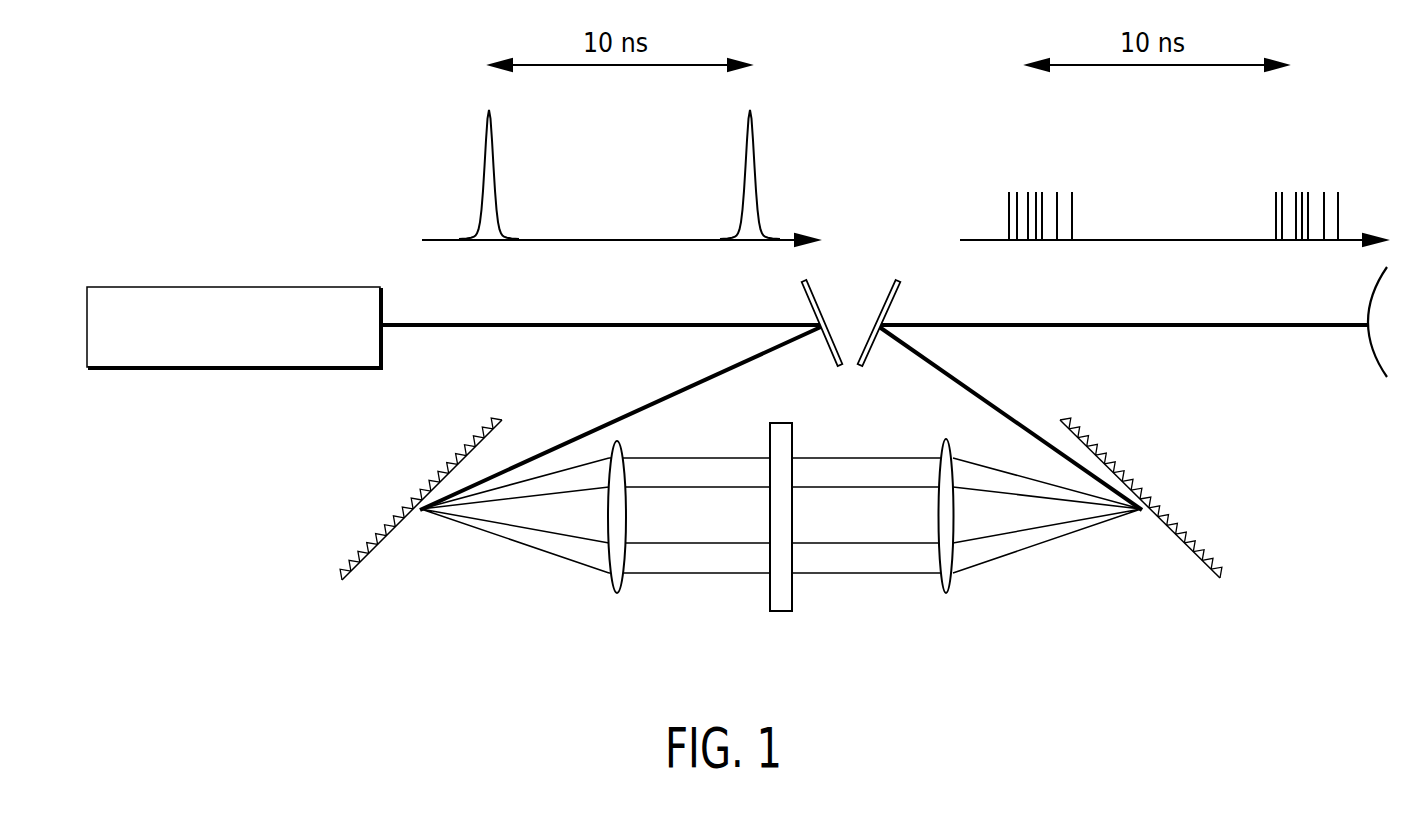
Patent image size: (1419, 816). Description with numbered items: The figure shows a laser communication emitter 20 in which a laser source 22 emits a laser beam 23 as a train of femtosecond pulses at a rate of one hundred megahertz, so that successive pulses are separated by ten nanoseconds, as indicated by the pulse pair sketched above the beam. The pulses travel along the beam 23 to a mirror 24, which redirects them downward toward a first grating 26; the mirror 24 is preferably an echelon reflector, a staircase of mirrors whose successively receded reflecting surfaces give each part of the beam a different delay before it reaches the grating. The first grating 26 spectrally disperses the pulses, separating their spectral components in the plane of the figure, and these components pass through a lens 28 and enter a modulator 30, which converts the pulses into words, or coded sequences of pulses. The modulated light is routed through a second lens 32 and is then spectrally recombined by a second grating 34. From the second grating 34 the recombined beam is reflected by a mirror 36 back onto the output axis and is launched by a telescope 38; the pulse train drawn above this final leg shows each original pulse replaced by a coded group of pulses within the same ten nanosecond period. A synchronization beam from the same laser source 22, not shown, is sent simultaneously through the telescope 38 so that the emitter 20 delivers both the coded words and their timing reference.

The laser communication emitter 20 is at (221, 110).
The laser source 22 is at (193, 285).
The laser beam 23 is at (485, 318).
The mirror 24 is at (803, 293).
The first grating 26 is at (461, 462).
The lens 28 is at (613, 582).
The modulator 30 is at (780, 423).
The lens 32 is at (953, 582).
The second grating 34 is at (1173, 527).
The mirror 36 is at (898, 292).
The telescope 38 is at (1373, 358).